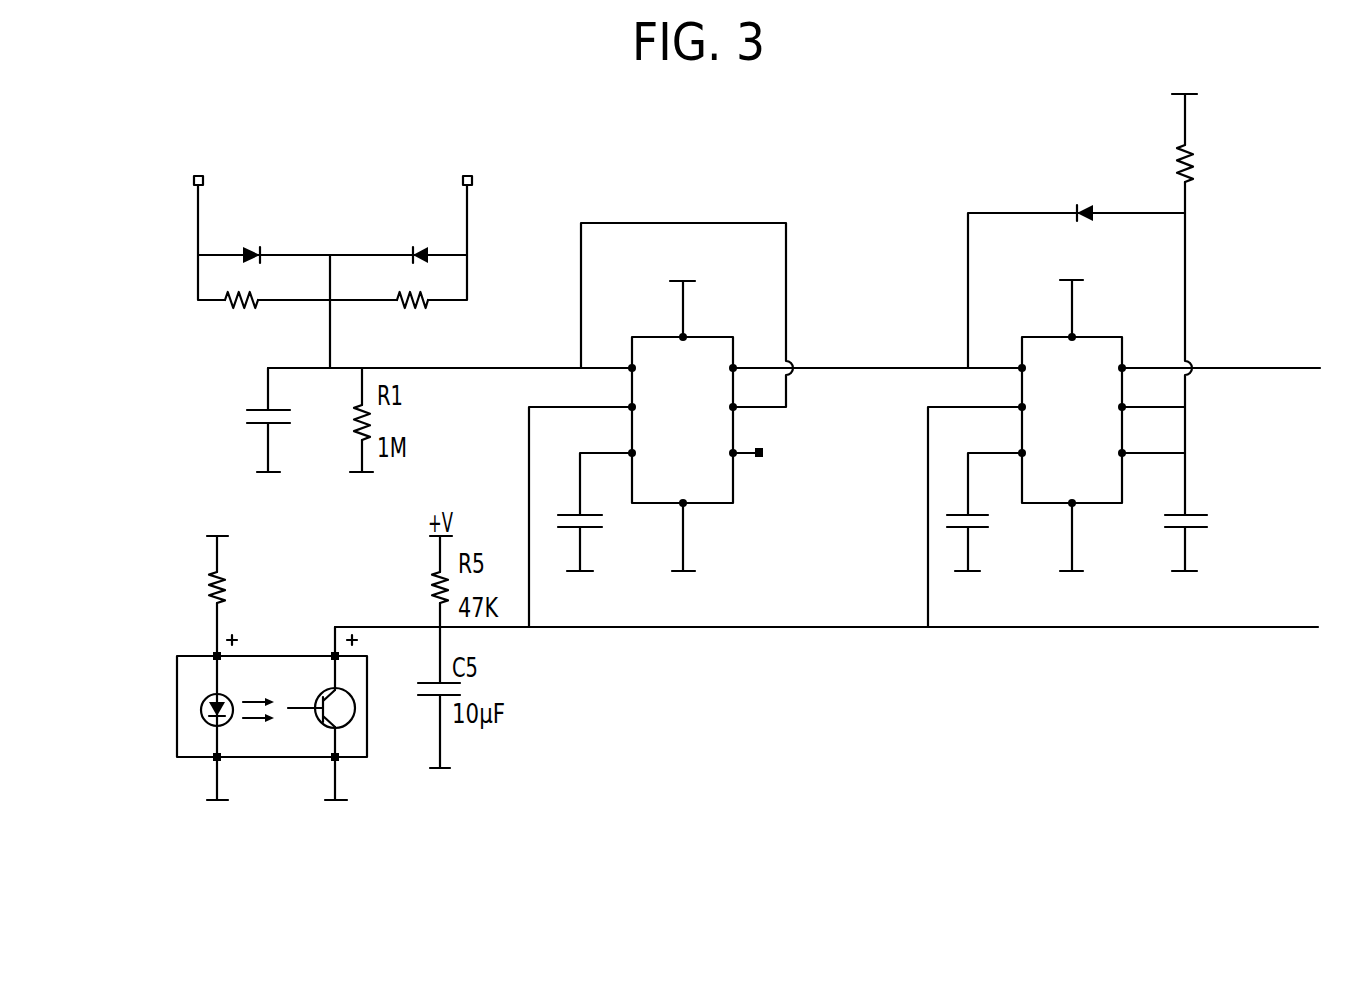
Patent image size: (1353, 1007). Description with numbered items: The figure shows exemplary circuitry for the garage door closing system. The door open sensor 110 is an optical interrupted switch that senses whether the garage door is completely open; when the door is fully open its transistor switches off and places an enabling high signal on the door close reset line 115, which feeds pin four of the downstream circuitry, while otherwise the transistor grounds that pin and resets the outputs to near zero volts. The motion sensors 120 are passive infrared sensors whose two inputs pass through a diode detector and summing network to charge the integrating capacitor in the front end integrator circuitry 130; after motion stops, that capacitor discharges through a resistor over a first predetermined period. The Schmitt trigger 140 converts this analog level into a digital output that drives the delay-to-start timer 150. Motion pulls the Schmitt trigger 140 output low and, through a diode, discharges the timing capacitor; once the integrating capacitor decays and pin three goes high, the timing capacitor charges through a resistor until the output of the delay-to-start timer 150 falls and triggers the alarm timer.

The door open sensor 110 is at (391, 791).
The door close reset line 115 is at (775, 627).
The motion sensors 120 is at (282, 127).
The front end integrator circuitry 130 is at (235, 413).
The Schmitt trigger 140 is at (695, 140).
The delay-to-start timer circuitry 150 is at (1044, 150).